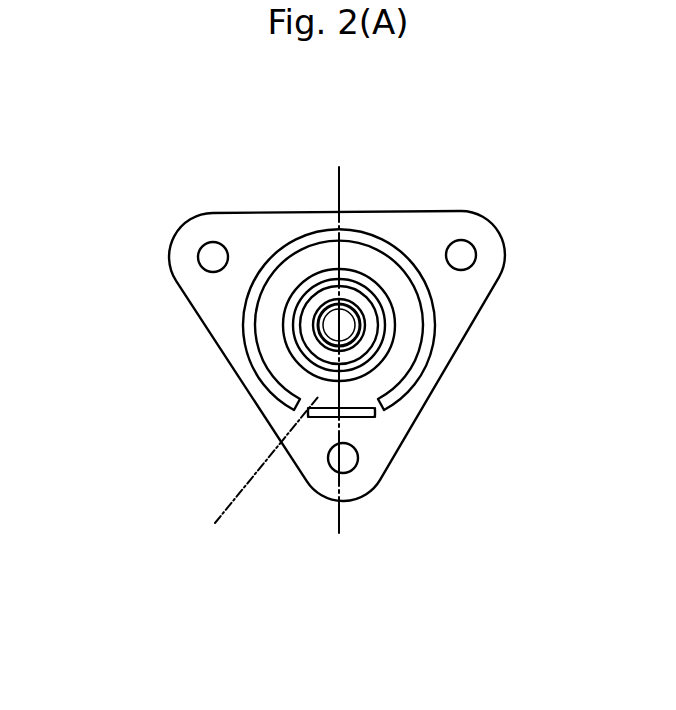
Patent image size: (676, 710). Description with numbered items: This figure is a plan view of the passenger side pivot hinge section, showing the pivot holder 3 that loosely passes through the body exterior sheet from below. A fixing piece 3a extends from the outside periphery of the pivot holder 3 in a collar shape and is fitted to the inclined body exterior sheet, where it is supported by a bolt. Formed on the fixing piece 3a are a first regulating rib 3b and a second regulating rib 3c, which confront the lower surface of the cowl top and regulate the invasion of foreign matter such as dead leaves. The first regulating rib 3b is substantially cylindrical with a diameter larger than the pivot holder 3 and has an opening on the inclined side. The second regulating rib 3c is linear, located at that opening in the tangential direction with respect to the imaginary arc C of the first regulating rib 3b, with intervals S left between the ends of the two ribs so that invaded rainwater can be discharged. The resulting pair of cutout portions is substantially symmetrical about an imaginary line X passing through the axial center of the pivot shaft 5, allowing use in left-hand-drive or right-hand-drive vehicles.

The pivot holder 3 is at (162, 380).
The fixing piece 3a is at (461, 222).
The first regulating rib 3b is at (433, 312).
The second regulating rib 3c is at (367, 420).
The pivot shaft 5 is at (353, 328).
The intervals S is at (300, 420).
The imaginary line X is at (331, 124).
The imaginary arc C is at (252, 471).